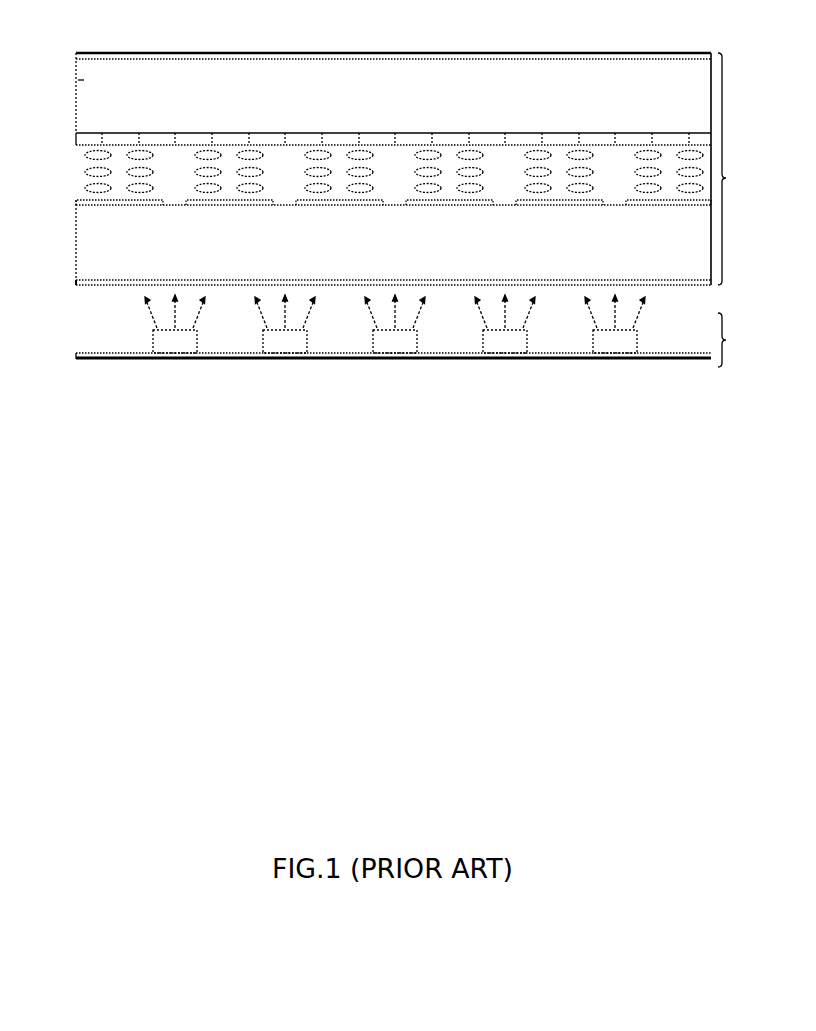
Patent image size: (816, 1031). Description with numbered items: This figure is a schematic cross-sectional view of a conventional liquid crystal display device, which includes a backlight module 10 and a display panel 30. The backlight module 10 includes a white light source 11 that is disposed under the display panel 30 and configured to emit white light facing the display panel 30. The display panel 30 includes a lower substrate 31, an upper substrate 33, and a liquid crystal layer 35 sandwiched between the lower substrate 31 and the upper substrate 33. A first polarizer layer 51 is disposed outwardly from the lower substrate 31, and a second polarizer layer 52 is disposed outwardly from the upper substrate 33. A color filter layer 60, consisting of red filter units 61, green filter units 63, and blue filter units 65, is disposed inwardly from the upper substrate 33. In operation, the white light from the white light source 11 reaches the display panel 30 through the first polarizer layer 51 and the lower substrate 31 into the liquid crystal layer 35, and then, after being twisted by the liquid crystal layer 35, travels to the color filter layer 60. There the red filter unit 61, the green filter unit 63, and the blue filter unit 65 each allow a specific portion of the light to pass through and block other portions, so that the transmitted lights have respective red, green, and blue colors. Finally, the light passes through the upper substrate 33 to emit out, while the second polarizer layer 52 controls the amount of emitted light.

The backlight module 10 is at (416, 346).
The white light source 11 is at (187, 350).
The display panel 30 is at (733, 169).
The lower substrate 31 is at (82, 226).
The upper substrate 33 is at (82, 79).
The liquid crystal layer 35 is at (72, 146).
The first polarizer layer 51 is at (78, 284).
The second polarizer layer 52 is at (121, 52).
The color filter layer 60 is at (76, 136).
The red filter unit 61 is at (184, 133).
The green filter unit 63 is at (219, 133).
The blue filter unit 65 is at (256, 133).